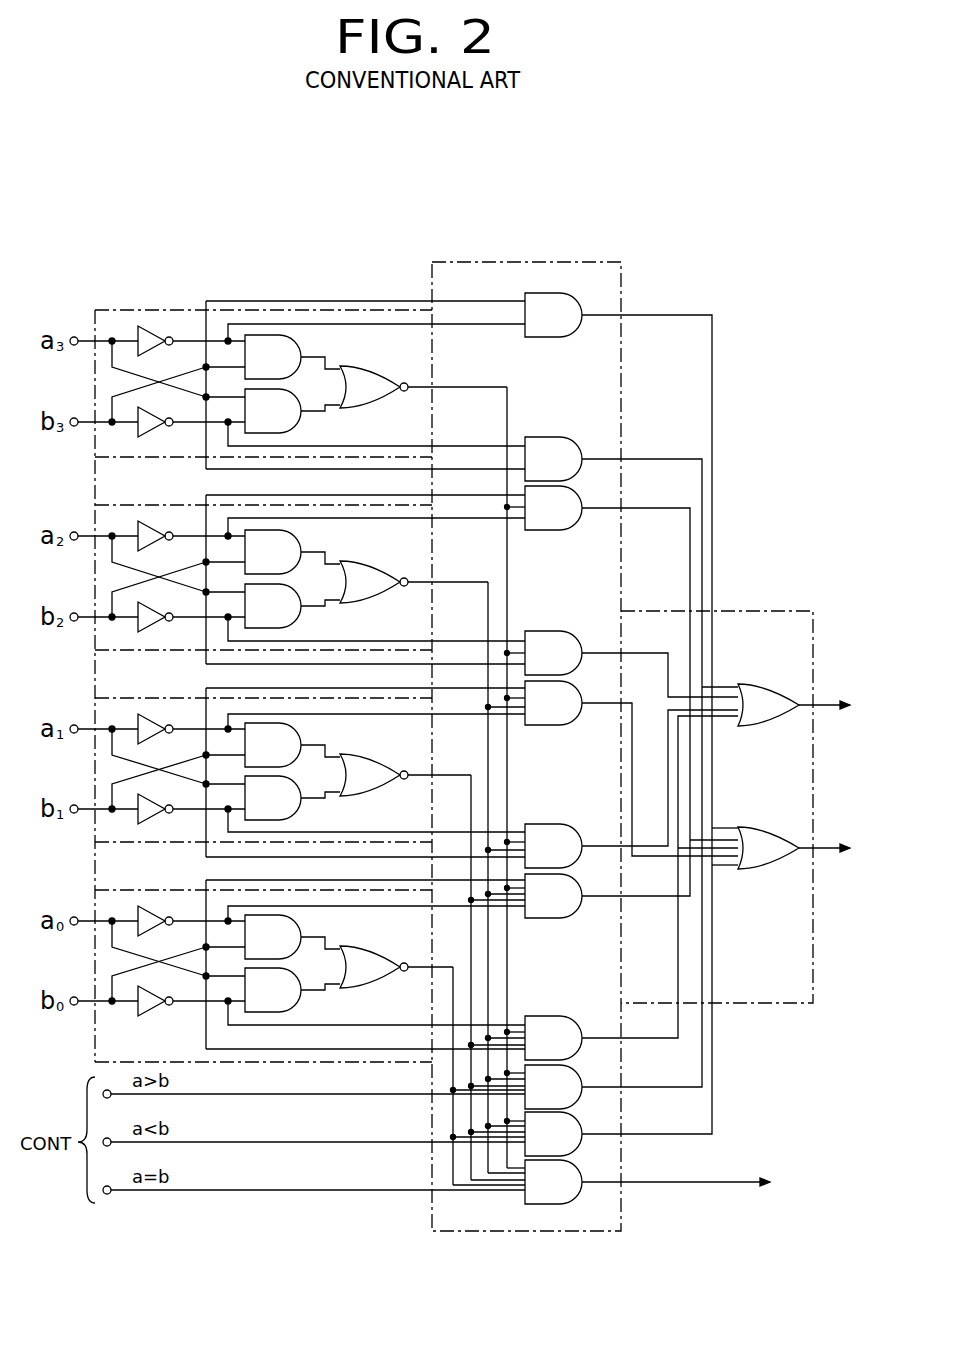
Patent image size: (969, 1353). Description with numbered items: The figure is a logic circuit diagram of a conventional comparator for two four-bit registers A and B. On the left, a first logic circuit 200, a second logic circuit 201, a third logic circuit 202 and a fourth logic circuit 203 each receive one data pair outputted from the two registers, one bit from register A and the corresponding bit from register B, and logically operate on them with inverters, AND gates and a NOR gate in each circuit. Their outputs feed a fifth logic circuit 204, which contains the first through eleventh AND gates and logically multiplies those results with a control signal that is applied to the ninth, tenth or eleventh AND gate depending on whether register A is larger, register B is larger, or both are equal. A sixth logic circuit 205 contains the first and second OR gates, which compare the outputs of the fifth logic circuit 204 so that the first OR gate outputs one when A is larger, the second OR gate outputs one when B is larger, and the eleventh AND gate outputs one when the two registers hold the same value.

The first logic circuit 200 is at (147, 310).
The second logic circuit 201 is at (95, 488).
The third logic circuit 202 is at (95, 682).
The fourth logic circuit 203 is at (95, 875).
The fifth logic circuit 204 is at (614, 262).
The sixth logic circuit 205 is at (735, 611).